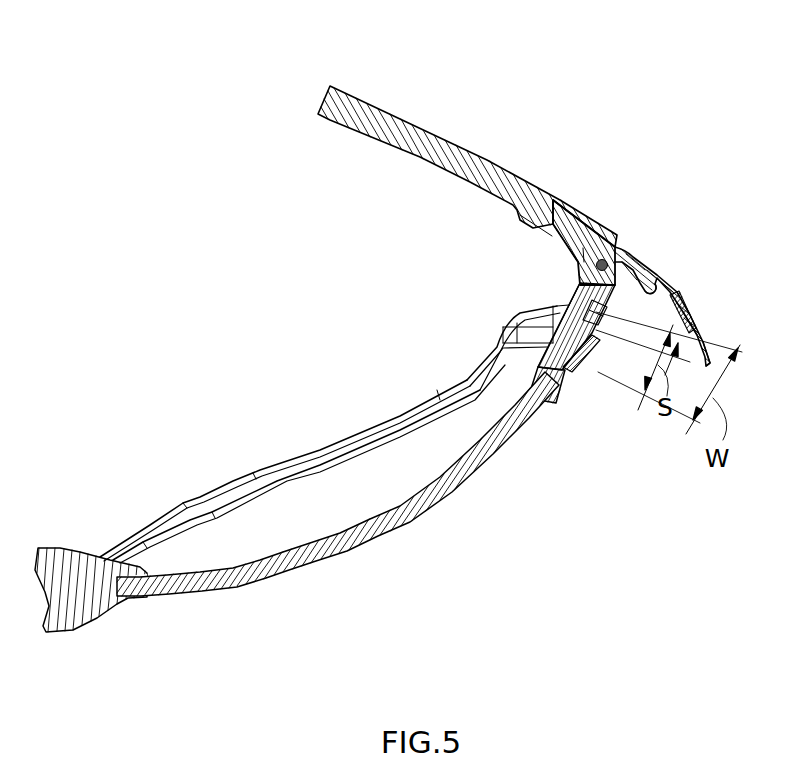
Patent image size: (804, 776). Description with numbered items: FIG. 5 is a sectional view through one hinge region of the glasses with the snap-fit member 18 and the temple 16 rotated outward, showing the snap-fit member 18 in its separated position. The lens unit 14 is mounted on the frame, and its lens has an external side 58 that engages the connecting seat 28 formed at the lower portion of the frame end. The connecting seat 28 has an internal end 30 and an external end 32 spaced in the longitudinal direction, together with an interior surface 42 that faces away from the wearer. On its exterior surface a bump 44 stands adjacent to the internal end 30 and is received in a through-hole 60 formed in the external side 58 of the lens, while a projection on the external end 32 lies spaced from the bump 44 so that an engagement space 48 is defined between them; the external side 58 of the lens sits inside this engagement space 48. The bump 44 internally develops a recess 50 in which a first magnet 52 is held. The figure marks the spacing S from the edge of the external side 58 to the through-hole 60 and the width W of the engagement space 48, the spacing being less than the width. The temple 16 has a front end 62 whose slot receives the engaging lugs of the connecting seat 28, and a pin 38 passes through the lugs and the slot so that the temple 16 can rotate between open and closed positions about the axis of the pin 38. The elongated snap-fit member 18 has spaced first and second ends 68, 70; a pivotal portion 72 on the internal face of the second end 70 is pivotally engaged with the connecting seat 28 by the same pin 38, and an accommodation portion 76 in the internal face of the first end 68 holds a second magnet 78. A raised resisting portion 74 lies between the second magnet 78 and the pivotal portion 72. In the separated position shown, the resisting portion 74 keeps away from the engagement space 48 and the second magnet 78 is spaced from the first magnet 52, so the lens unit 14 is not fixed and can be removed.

The lens unit 14 is at (405, 560).
The temple 16 is at (366, 110).
The snap-fit member 18 is at (648, 258).
The connecting seat 28 is at (540, 318).
The internal end 30 is at (472, 378).
The external end 32 is at (563, 268).
The pin 38 is at (596, 238).
The interior surface 42 is at (574, 300).
The bump 44 is at (570, 376).
The engagement space 48 is at (633, 252).
The recess 50 is at (500, 340).
The first magnet 52 is at (588, 386).
The external side 58 is at (570, 312).
The through-hole 60 is at (555, 384).
The front end 62 is at (536, 212).
The first end 68 is at (709, 352).
The second end 70 is at (562, 250).
The pivotal portion 72 is at (617, 258).
The resisting portion 74 is at (660, 278).
The accommodation portion 76 is at (701, 328).
The second magnet 78 is at (687, 299).